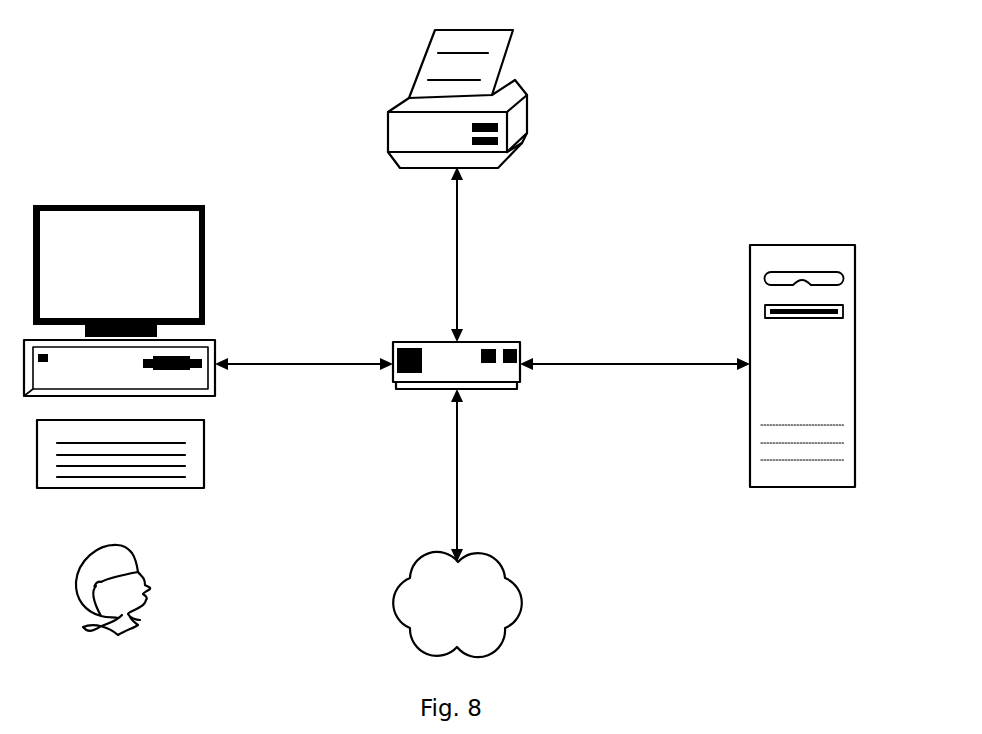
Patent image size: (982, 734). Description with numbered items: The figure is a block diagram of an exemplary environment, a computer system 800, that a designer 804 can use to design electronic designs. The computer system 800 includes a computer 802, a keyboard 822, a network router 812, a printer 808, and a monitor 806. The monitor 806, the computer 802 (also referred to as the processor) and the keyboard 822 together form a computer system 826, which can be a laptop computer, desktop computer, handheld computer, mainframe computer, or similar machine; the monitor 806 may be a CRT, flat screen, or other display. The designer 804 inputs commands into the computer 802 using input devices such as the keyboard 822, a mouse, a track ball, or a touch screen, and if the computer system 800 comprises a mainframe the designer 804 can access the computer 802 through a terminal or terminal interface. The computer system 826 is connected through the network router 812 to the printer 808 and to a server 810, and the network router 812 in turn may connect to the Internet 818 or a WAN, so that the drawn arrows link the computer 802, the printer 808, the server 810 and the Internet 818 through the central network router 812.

The computer system 800 is at (732, 106).
The computer 802 is at (217, 342).
The designer 804 is at (136, 552).
The monitor 806 is at (205, 206).
The printer 808 is at (388, 142).
The server 810 is at (750, 468).
The network router 812 is at (483, 342).
The Internet 818 is at (490, 557).
The keyboard 822 is at (205, 452).
The computer system 826 is at (209, 259).